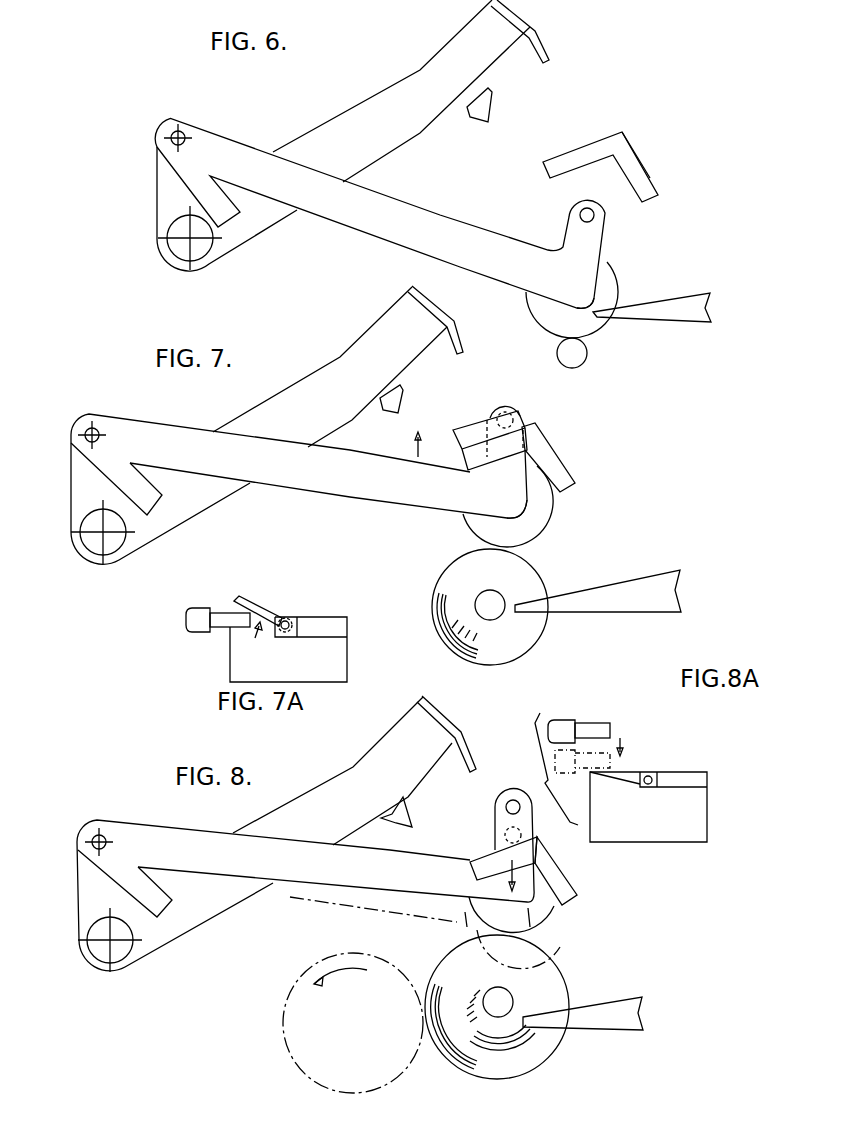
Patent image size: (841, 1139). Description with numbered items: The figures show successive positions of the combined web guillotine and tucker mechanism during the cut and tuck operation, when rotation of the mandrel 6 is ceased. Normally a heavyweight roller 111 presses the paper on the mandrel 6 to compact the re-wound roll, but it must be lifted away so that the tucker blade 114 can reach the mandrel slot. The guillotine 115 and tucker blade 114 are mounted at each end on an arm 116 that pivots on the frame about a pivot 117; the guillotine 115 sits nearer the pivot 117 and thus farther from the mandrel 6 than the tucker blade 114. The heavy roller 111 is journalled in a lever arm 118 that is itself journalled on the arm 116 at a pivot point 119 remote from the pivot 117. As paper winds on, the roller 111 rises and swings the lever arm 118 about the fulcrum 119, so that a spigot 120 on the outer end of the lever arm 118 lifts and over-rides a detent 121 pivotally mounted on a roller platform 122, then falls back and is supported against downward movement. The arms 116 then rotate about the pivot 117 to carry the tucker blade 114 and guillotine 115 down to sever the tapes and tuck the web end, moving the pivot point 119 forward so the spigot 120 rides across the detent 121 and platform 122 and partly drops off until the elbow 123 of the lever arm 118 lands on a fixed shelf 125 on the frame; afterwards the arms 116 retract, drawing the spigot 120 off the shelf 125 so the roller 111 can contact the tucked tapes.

In FIG. 6, the mandrel 6 is at (578, 355).
In FIG. 7, the mandrel 6 is at (484, 606).
In FIG. 8, the mandrel 6 is at (500, 1007).
In FIG. 6, the heavyweight roller 111 is at (610, 287).
In FIG. 7, the heavyweight roller 111 is at (542, 510).
In FIG. 8, the heavyweight roller 111 is at (548, 940).
In FIG. 6, the tucker blade 114 is at (548, 60).
In FIG. 7, the tucker blade 114 is at (463, 350).
In FIG. 8, the tucker blade 114 is at (473, 768).
In FIG. 6, the guillotine 115 is at (489, 110).
In FIG. 7, the guillotine 115 is at (397, 413).
In FIG. 8, the guillotine 115 is at (393, 825).
In FIG. 6, the arm 116 is at (320, 133).
In FIG. 7, the arm 116 is at (253, 417).
In FIG. 8, the arm 116 is at (342, 771).
In FIG. 6, the pivot 117 is at (198, 250).
In FIG. 7, the pivot 117 is at (88, 537).
In FIG. 8, the pivot 117 is at (130, 947).
In FIG. 6, the lever arm 118 is at (367, 223).
In FIG. 7, the lever arm 118 is at (320, 480).
In FIG. 8, the lever arm 118 is at (435, 870).
In FIG. 6, the pivot point 119 is at (184, 130).
In FIG. 7, the pivot point 119 is at (90, 428).
In FIG. 8, the pivot point 119 is at (107, 837).
In FIG. 6, the spigot 120 is at (580, 213).
In FIG. 7, the spigot 120 is at (516, 418).
In FIG. 7A, the spigot 120 is at (227, 615).
In FIG. 8, the spigot 120 is at (512, 805).
In FIG. 8A, the spigot 120 is at (595, 727).
In FIG. 7, the detent 121 is at (467, 427).
In FIG. 7A, the detent 121 is at (252, 612).
In FIG. 8, the detent 121 is at (503, 858).
In FIG. 8A, the detent 121 is at (625, 772).
In FIG. 6, the roller platform 122 is at (647, 185).
In FIG. 7, the roller platform 122 is at (558, 470).
In FIG. 7A, the roller platform 122 is at (332, 643).
In FIG. 8, the roller platform 122 is at (560, 883).
In FIG. 8A, the roller platform 122 is at (621, 777).
In FIG. 6, the elbow 123 is at (545, 318).
In FIG. 7, the elbow 123 is at (520, 520).
In FIG. 8, the elbow 123 is at (533, 908).
In FIG. 6, the fixed shelf 125 is at (652, 307).
In FIG. 7, the fixed shelf 125 is at (625, 590).
In FIG. 8, the fixed shelf 125 is at (610, 1012).